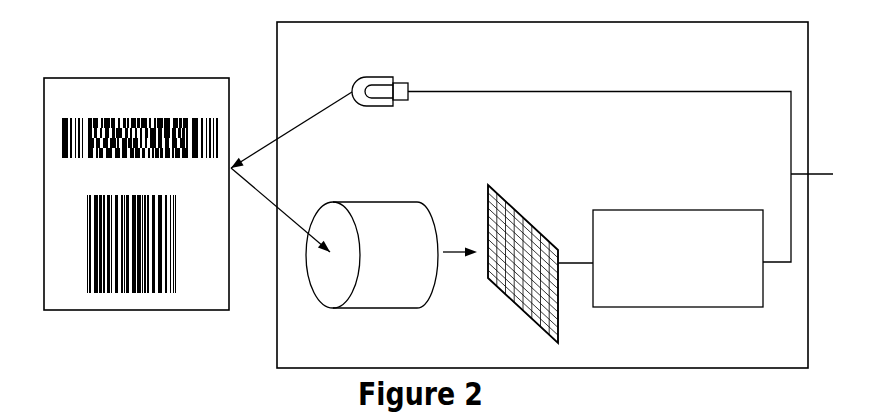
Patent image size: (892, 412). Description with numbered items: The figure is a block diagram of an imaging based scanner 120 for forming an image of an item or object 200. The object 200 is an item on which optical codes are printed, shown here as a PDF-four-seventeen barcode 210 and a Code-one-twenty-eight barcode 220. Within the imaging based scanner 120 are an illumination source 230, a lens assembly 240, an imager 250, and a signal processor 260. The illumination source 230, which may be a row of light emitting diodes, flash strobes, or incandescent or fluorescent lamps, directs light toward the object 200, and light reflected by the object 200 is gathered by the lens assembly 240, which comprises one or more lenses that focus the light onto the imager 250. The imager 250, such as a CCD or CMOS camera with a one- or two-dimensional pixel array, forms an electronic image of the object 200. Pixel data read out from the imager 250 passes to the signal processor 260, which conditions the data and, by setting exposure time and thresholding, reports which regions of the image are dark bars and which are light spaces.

The imaging based scanner 120 is at (796, 48).
The object 200 is at (226, 101).
The barcode 210 is at (128, 111).
The barcode 220 is at (128, 189).
The illumination source 230 is at (358, 83).
The lens assembly 240 is at (385, 283).
The imager 250 is at (522, 268).
The signal processor 260 is at (692, 291).